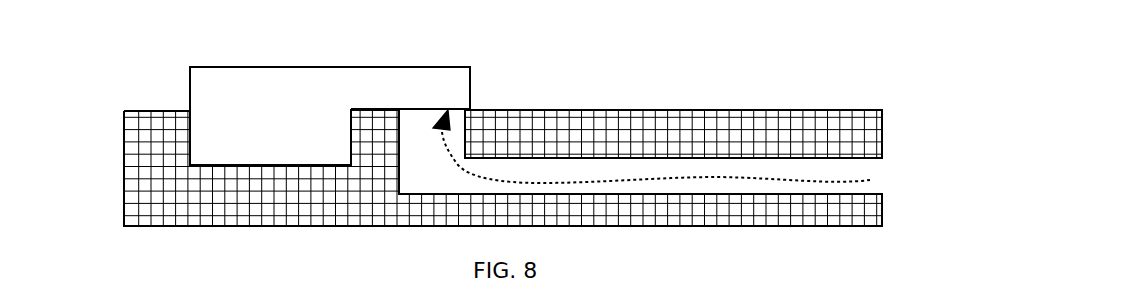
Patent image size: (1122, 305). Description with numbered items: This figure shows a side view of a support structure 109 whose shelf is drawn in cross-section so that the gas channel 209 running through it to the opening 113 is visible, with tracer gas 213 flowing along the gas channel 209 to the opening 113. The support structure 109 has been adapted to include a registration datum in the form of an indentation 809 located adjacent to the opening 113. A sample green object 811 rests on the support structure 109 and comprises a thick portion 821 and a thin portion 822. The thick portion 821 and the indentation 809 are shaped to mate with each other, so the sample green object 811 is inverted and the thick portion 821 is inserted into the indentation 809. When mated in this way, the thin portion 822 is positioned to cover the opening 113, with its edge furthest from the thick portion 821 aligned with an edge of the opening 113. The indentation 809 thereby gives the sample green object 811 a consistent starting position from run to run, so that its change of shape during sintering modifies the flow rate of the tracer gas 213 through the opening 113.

The support structure 109 is at (753, 127).
The opening 113 is at (470, 98).
The gas channel 209 is at (442, 188).
The tracer gas 213 is at (867, 179).
The indentation 809 is at (190, 163).
The sample green object 811 is at (190, 80).
The thick portion 821 is at (276, 114).
The thin portion 822 is at (418, 98).